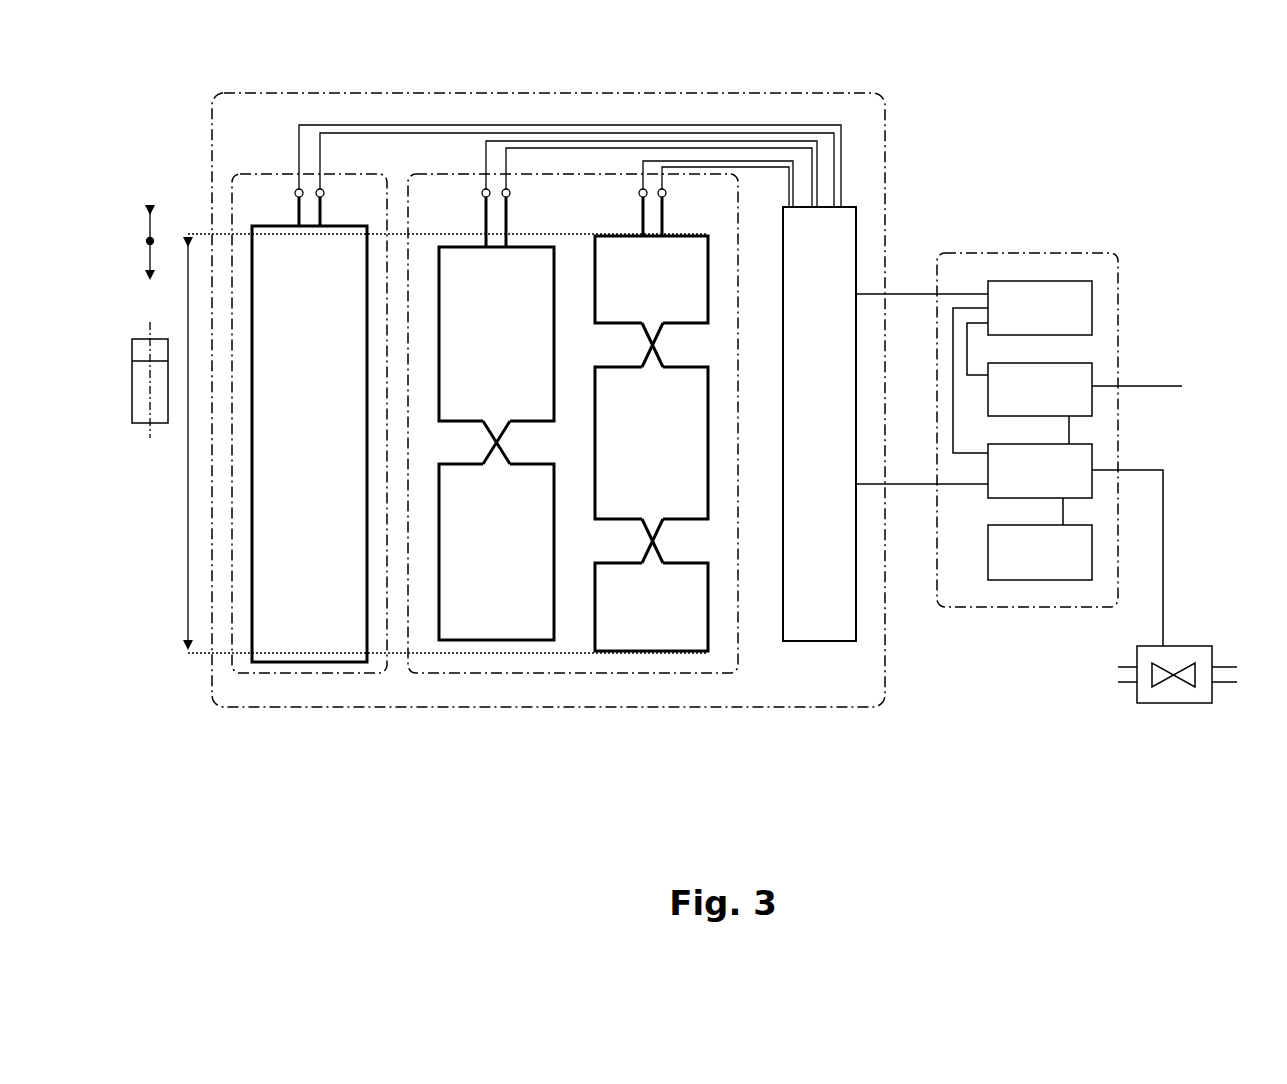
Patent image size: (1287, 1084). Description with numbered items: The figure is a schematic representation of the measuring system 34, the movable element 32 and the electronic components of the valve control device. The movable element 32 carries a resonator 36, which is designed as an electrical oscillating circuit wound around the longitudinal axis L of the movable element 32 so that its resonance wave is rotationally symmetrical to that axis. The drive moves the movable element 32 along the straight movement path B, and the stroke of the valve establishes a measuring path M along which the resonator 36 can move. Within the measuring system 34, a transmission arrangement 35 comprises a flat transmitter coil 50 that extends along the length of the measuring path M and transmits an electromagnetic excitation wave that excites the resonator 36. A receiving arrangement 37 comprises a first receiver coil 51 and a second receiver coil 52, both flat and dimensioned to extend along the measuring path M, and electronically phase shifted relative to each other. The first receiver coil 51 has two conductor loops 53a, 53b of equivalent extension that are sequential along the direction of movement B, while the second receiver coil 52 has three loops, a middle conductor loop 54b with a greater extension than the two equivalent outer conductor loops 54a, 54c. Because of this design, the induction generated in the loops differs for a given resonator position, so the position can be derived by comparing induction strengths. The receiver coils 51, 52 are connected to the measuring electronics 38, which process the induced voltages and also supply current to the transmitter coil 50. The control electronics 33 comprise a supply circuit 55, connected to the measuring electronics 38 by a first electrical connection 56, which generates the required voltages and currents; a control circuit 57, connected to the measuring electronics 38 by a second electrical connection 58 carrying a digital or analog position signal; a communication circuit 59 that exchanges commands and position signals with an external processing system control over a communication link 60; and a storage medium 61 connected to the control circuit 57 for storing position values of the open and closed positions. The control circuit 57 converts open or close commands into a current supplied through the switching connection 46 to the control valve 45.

The movable element 32 is at (131, 389).
The control electronics 33 is at (1066, 608).
The measuring system 34 is at (885, 688).
The transmission arrangement 35 is at (298, 675).
The resonator 36 is at (144, 345).
The receiving arrangement 37 is at (458, 675).
The measuring electronics 38 is at (812, 620).
The control valve 45 is at (1172, 705).
The switching connection 46 is at (1163, 577).
The transmitter coil 50 is at (332, 662).
The first receiver coil 51 is at (628, 457).
The second receiver coil 52 is at (694, 467).
The conductor loop 53a is at (553, 545).
The conductor loop 53b is at (553, 328).
The outer conductor loop 54a is at (709, 611).
The middle conductor loop 54b is at (709, 442).
The outer conductor loop 54c is at (708, 278).
The supply circuit 55 is at (1045, 290).
The first electrical connection 56 is at (908, 293).
The control circuit 57 is at (1082, 465).
The second electrical connection 58 is at (908, 485).
The communication circuit 59 is at (1067, 382).
The communication link 60 is at (1145, 385).
The storage medium 61 is at (1083, 535).
The movement path B is at (146, 241).
The longitudinal axis L is at (150, 440).
The measuring path M is at (188, 562).